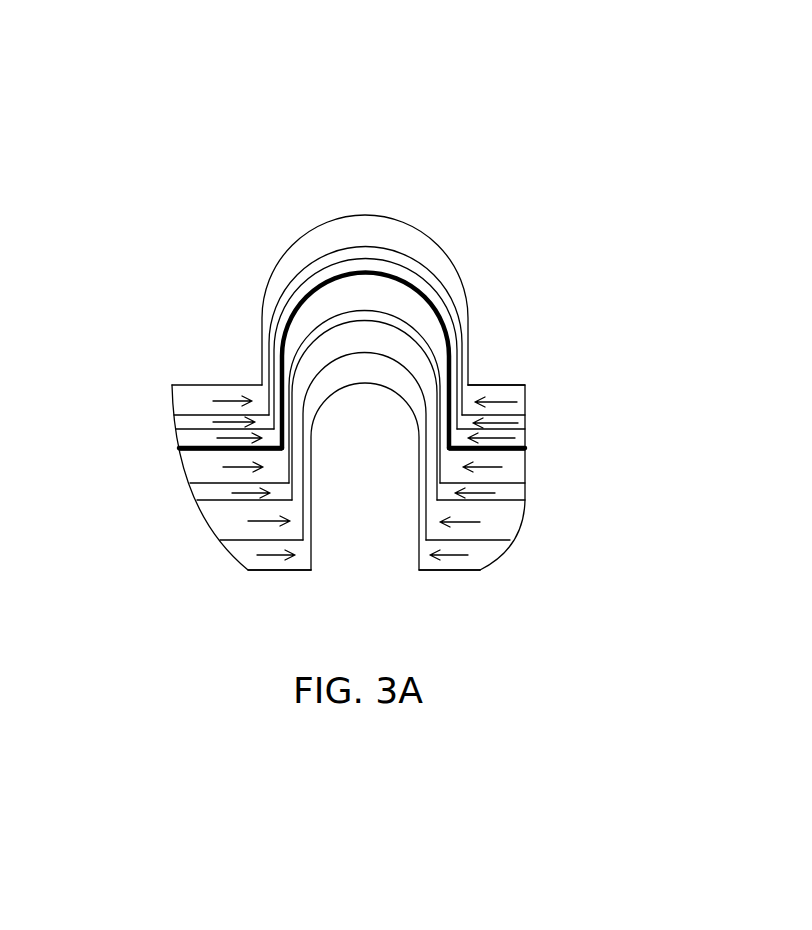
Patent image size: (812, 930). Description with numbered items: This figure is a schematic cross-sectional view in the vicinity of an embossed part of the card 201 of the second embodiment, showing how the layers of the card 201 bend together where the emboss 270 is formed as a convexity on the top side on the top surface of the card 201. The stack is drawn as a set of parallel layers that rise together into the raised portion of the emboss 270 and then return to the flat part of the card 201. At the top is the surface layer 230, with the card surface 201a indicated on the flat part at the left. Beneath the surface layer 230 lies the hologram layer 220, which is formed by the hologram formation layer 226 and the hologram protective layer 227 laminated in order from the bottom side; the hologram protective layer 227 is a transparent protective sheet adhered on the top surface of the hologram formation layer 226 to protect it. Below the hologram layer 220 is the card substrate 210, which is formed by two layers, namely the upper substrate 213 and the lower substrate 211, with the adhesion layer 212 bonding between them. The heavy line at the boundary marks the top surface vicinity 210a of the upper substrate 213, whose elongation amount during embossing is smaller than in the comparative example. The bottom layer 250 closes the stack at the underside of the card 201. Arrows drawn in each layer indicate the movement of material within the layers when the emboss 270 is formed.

The card 201 is at (266, 183).
The card surface 201a is at (213, 384).
The emboss 270 is at (443, 234).
The surface layer 230 is at (517, 393).
The hologram layer 220 is at (479, 420).
The hologram protective layer 227 is at (519, 418).
The hologram formation layer 226 is at (520, 437).
The top surface vicinity of the upper substrate 210a is at (518, 451).
The card substrate 210 is at (501, 533).
The upper substrate 213 is at (527, 476).
The adhesion layer 212 is at (527, 497).
The lower substrate 211 is at (508, 525).
The bottom layer 250 is at (462, 567).